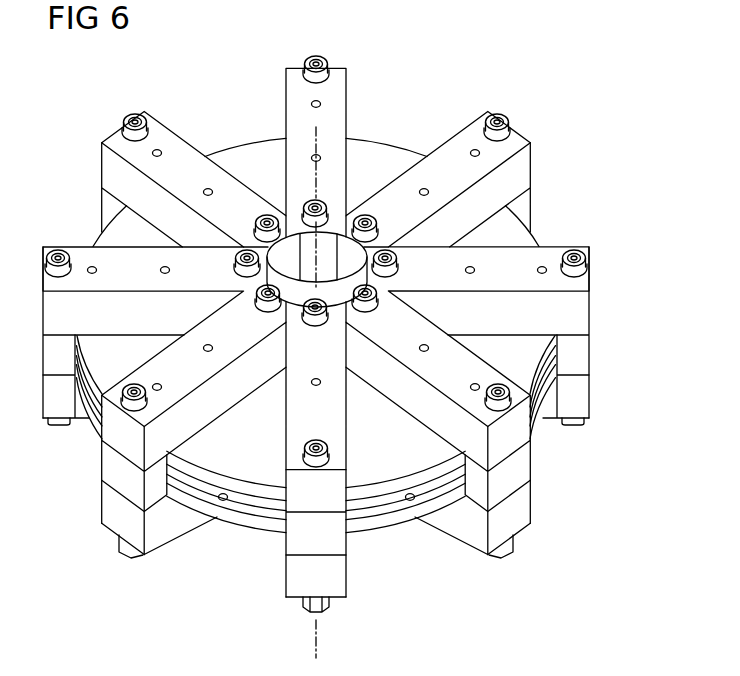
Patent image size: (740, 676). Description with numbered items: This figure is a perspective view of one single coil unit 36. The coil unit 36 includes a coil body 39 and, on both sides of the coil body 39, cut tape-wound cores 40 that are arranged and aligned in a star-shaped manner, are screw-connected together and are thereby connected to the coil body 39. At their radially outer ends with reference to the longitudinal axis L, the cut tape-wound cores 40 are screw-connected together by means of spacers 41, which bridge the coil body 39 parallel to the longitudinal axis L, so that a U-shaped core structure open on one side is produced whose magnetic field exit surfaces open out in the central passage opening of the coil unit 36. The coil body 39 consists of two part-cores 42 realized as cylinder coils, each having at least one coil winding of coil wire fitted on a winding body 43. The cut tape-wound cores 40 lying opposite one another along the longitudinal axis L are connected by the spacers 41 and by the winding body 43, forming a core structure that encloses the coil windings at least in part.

The coil unit 36 is at (549, 95).
The coil body 39 is at (420, 467).
The cut tape-wound core 40 is at (552, 256).
The spacer 41 is at (578, 359).
The part-core 42 is at (213, 478).
The winding body 43 is at (332, 288).
The longitudinal axis L is at (318, 127).